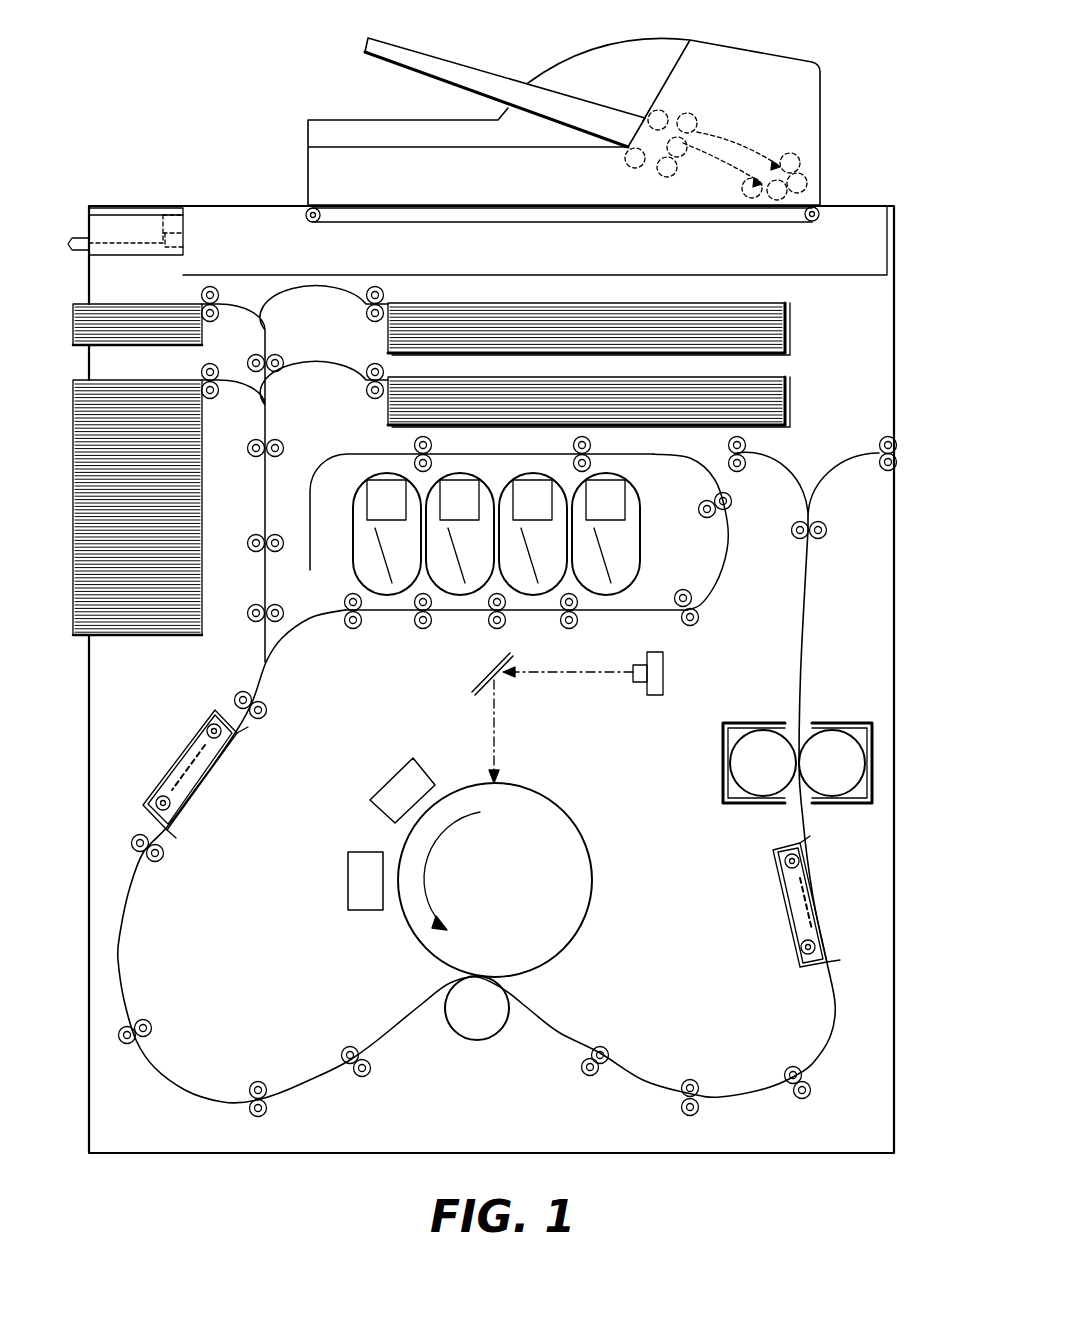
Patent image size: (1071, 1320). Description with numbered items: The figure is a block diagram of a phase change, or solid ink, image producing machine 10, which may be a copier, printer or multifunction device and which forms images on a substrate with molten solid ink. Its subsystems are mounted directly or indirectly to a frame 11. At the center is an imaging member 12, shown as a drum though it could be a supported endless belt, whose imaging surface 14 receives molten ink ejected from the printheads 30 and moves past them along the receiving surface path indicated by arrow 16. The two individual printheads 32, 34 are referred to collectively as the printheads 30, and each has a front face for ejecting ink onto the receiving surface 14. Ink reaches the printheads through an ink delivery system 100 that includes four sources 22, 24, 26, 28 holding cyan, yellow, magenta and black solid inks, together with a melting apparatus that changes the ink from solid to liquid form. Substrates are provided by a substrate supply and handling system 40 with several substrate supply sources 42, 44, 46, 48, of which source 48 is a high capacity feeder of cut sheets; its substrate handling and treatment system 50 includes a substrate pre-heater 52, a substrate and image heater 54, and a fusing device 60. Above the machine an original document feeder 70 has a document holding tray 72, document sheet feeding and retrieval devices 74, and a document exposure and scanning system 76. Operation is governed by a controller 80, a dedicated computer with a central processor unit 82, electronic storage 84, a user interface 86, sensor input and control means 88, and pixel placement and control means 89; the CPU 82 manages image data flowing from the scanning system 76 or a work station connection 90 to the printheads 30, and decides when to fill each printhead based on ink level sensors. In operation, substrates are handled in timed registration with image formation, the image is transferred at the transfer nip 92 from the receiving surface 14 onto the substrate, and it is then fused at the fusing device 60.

The image producing machine 10 is at (235, 55).
The frame 11 is at (89, 785).
The imaging member 12 is at (572, 857).
The imaging surface 14 is at (512, 783).
The receiving surface path 16 is at (438, 878).
The ink source 22 is at (387, 534).
The ink source 24 is at (460, 534).
The ink source 26 is at (533, 534).
The ink source 28 is at (606, 534).
The printheads 30 is at (318, 792).
The printhead 32 is at (400, 777).
The printhead 34 is at (348, 880).
The substrate supply and handling system 40 is at (180, 1077).
The substrate supply source 42 is at (797, 327).
The substrate supply source 44 is at (797, 403).
The substrate supply source 46 is at (183, 347).
The substrate supply source 48 is at (135, 640).
The substrate handling and treatment system 50 is at (263, 483).
The substrate pre-heater 52 is at (172, 760).
The substrate and image heater 54 is at (780, 893).
The fusing device 60 is at (755, 723).
The original document feeder 70 is at (372, 118).
The document holding tray 72 is at (410, 43).
The document sheet feeding and retrieval devices 74 is at (753, 135).
The document exposure and scanning system 76 is at (560, 222).
The controller 80 is at (148, 225).
The central processor unit 82 is at (110, 213).
The electronic storage 84 is at (118, 250).
The user interface 86 is at (148, 210).
The sensor input and control means 88 is at (180, 218).
The pixel placement and control means 89 is at (175, 240).
The work station connection 90 is at (82, 252).
The transfer nip 92 is at (446, 972).
The ink delivery system 100 is at (345, 474).